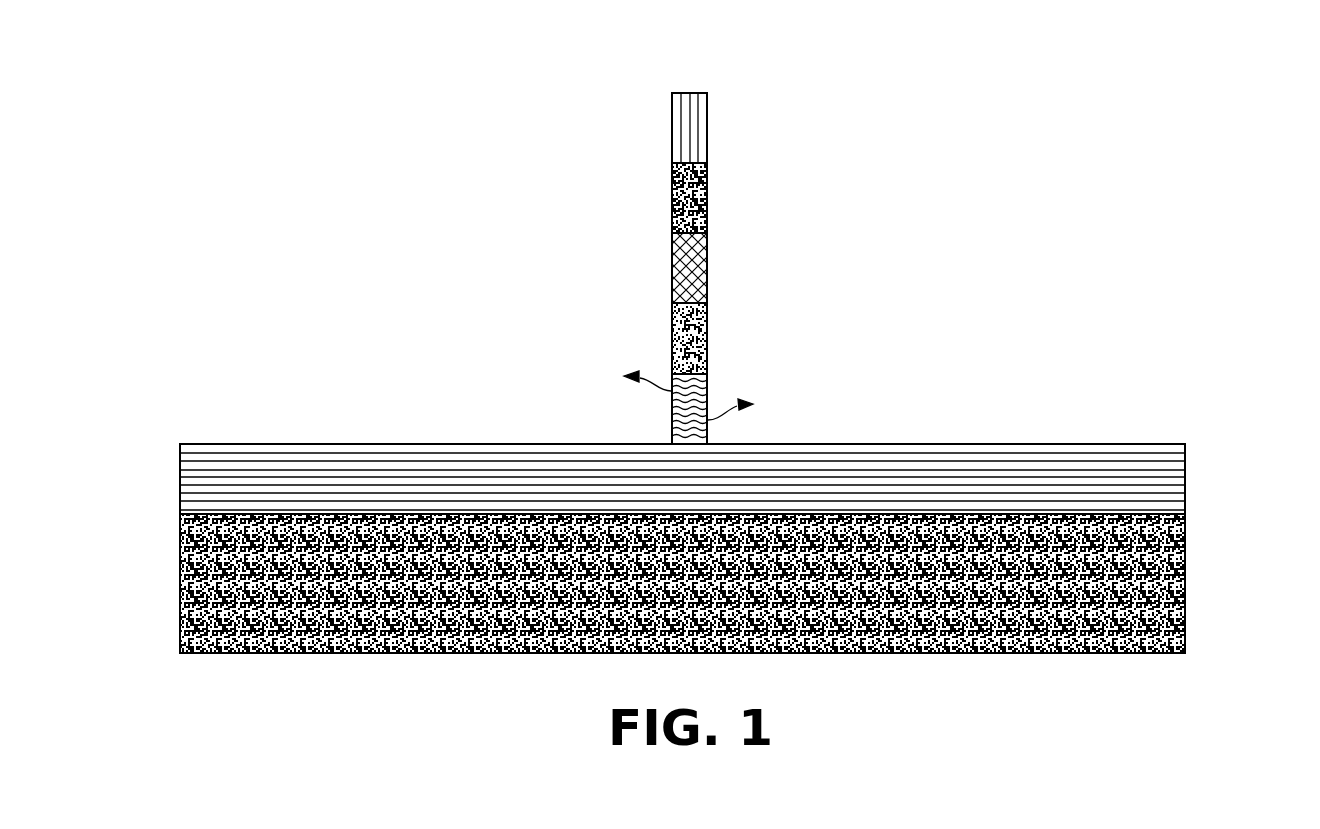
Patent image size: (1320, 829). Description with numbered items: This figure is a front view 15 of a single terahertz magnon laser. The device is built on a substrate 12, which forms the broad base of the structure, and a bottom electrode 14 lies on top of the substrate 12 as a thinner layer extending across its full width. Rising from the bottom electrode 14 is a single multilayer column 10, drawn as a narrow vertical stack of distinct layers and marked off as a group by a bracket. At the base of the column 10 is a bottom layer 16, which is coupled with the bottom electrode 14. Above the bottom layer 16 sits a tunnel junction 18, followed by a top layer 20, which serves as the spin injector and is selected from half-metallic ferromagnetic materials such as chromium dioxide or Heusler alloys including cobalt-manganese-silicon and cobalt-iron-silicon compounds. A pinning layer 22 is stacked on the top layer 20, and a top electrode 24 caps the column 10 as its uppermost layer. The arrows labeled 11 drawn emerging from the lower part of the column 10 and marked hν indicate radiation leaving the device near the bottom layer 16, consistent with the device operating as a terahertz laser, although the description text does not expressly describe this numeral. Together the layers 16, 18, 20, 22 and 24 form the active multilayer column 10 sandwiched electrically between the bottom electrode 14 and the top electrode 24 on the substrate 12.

The single multilayer column 10 is at (653, 268).
The emitted light (hν) 11 is at (630, 328).
The substrate 12 is at (1195, 574).
The bottom electrode 14 is at (1195, 470).
The front view 15 is at (677, 543).
The bottom layer 16 is at (716, 423).
The tunnel junction 18 is at (716, 330).
The top layer 20 is at (716, 258).
The pinning layer 22 is at (716, 188).
The top electrode 24 is at (716, 120).